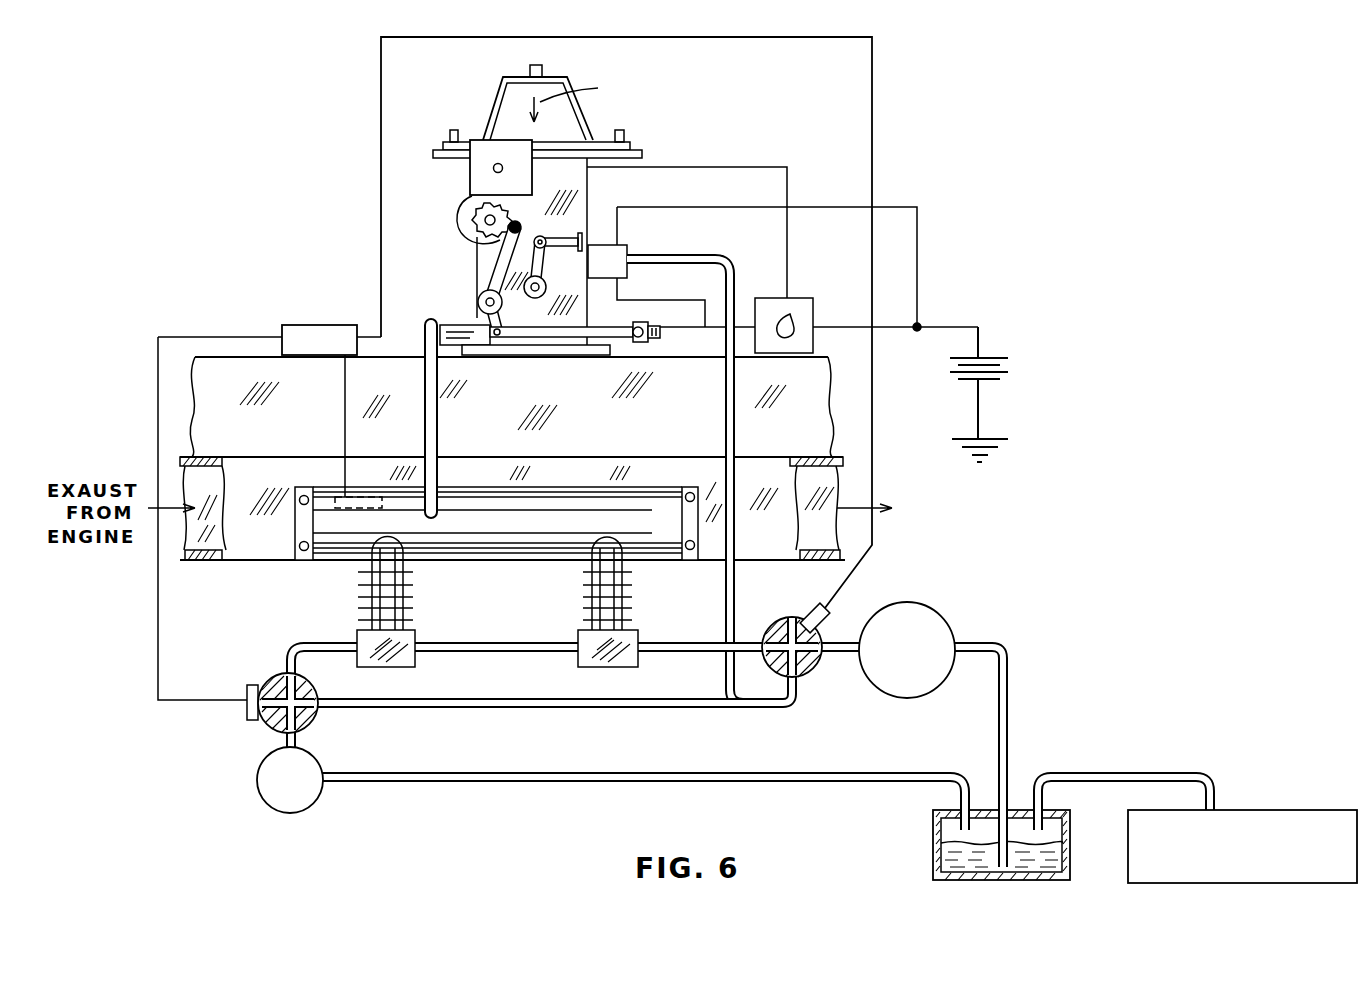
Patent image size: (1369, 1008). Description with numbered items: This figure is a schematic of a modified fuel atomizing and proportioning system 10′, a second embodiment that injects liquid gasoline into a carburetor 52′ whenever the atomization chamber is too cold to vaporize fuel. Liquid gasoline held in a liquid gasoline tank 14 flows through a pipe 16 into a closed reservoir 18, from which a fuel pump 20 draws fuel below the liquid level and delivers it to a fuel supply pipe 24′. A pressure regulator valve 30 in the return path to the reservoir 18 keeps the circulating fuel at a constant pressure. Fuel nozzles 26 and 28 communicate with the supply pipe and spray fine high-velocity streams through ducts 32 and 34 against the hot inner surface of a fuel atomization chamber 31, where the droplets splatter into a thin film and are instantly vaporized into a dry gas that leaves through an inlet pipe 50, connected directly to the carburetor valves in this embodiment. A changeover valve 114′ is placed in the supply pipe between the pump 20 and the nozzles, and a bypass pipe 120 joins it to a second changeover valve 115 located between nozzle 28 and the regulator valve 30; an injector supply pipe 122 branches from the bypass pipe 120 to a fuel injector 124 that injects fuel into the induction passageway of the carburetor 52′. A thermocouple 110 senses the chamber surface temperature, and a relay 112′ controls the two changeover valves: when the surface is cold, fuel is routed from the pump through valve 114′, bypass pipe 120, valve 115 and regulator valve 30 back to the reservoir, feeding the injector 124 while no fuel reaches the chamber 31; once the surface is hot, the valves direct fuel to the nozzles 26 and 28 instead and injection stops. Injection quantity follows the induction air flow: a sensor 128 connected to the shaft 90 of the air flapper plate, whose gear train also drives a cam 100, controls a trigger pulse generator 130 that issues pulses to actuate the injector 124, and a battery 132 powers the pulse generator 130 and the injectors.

The modified fuel atomizing and proportioning system 10′ is at (962, 258).
The liquid gasoline tank 14 is at (1128, 850).
The pipe 16 is at (1120, 776).
The closed reservoir 18 is at (933, 845).
The fuel pump 20 is at (940, 616).
The fuel supply pipe 24′ is at (530, 652).
The fuel nozzle 26 is at (638, 631).
The fuel nozzle 28 is at (375, 667).
The pressure regulator valve 30 is at (310, 803).
The fuel atomization chamber 31 is at (500, 580).
The duct 32 is at (586, 598).
The duct 34 is at (363, 597).
The inlet pipe 50 is at (440, 444).
The carburetor 52′ is at (477, 258).
The shaft 90 is at (497, 162).
The cam 100 is at (462, 220).
The thermocouple 110 is at (363, 431).
The relay 112′ is at (314, 324).
The changeover valve 114′ is at (781, 624).
The changeover valve 115 is at (308, 724).
The bypass pipe 120 is at (468, 710).
The injector supply pipe 122 is at (738, 444).
The fuel injector 124 is at (627, 256).
The sensor 128 is at (470, 170).
The trigger pulse generator 130 is at (795, 297).
The battery 132 is at (984, 356).